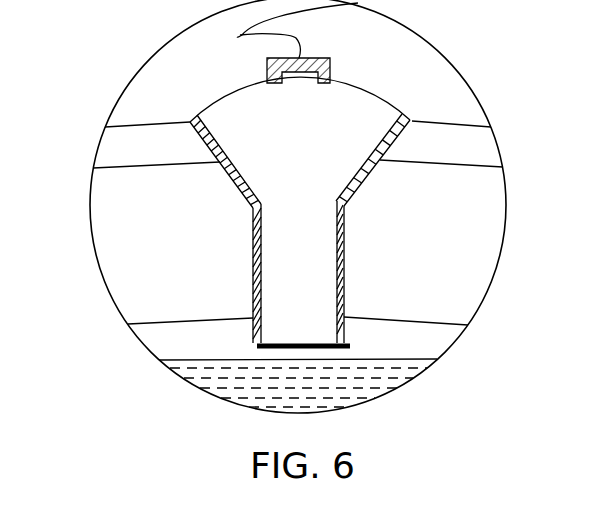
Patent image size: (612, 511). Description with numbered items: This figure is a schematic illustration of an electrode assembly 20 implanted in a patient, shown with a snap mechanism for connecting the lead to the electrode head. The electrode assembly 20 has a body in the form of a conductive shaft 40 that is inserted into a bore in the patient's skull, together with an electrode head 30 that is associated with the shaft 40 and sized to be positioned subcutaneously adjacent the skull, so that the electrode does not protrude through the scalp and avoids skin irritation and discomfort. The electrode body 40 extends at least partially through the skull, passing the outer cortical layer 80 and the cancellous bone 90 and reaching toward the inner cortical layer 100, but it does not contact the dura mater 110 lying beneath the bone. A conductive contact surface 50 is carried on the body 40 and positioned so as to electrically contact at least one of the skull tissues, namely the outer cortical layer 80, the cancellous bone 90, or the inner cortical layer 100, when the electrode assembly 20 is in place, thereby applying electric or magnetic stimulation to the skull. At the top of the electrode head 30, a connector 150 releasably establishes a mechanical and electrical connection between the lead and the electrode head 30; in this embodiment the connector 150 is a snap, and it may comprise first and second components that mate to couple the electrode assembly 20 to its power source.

The electrode assembly 20 is at (331, 206).
The electrode head 30 is at (375, 115).
The conductive shaft/electrode body 40 is at (355, 252).
The conductive contact surface 50 is at (262, 351).
The outer cortical layer 80 is at (113, 143).
The cancellous bone 90 is at (112, 243).
The inner cortical layer 100 is at (168, 340).
The dura mater 110 is at (237, 388).
The connector 150 is at (342, 57).